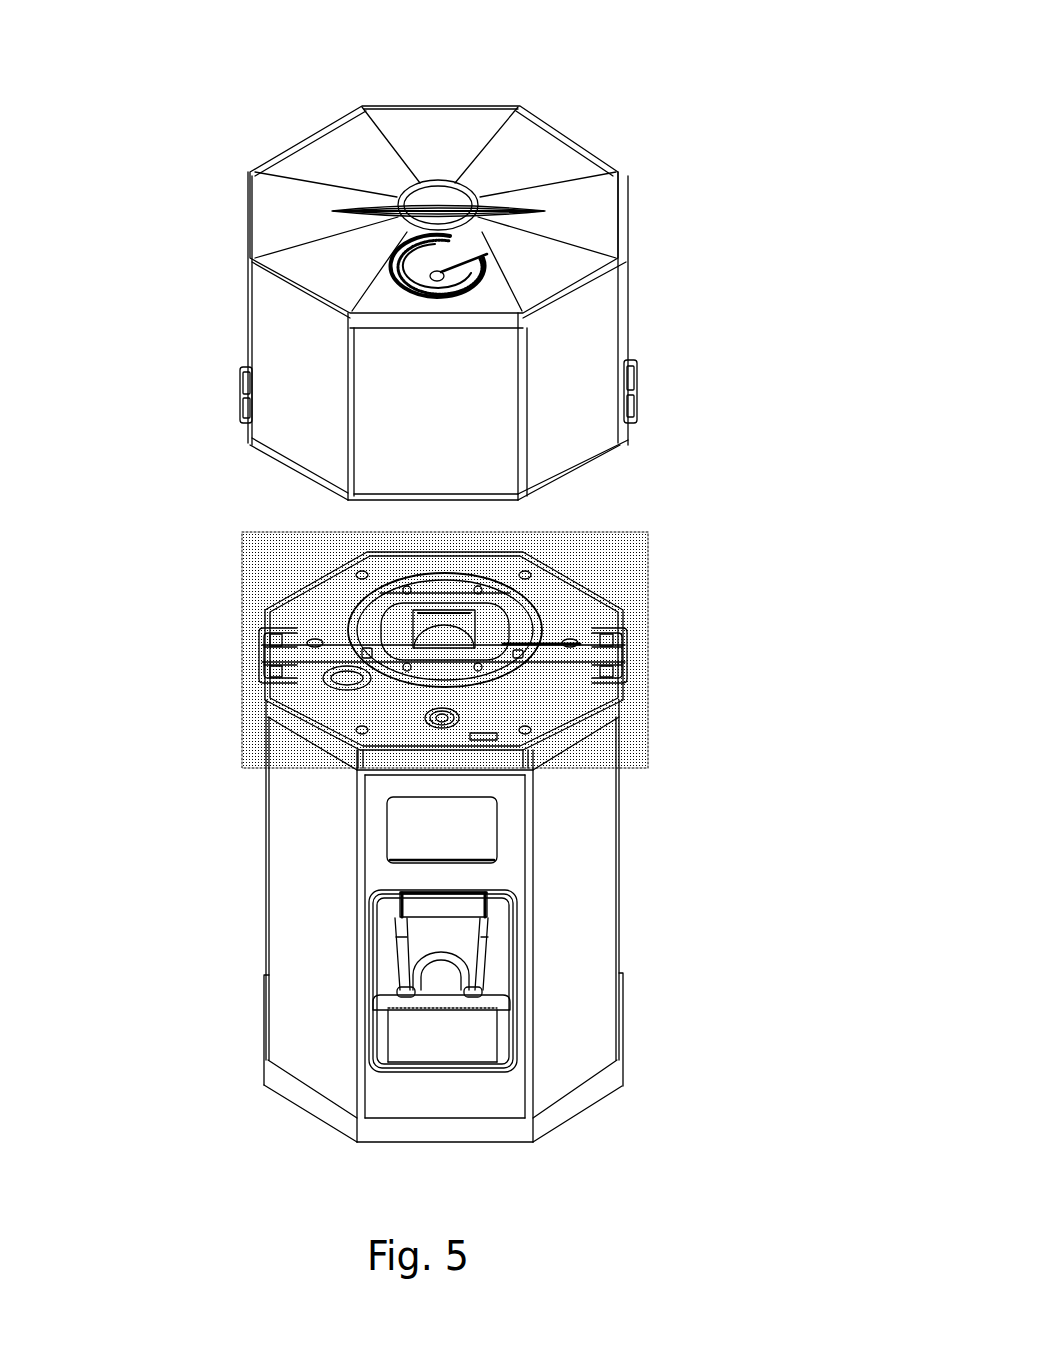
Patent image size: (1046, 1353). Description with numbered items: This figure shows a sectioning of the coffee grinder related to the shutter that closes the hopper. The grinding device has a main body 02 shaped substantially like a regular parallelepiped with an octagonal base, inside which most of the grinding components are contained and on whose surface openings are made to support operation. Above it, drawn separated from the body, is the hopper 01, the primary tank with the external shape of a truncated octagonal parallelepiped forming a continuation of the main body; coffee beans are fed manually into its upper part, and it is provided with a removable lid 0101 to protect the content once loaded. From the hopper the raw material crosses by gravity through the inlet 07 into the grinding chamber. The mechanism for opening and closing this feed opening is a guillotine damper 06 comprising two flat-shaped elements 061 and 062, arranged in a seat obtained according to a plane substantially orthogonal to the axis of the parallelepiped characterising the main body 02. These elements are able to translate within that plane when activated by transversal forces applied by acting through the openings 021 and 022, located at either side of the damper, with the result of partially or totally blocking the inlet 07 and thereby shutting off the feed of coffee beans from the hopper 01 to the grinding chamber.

The hopper 01 is at (569, 259).
The removable lid 0101 is at (574, 166).
The main body 02 is at (443, 780).
The opening 021 is at (163, 623).
The opening 022 is at (724, 617).
The guillotine damper 06 is at (443, 593).
The flat-shaped element 061 is at (572, 553).
The flat-shaped element 062 is at (529, 566).
The inlet 07 is at (256, 551).